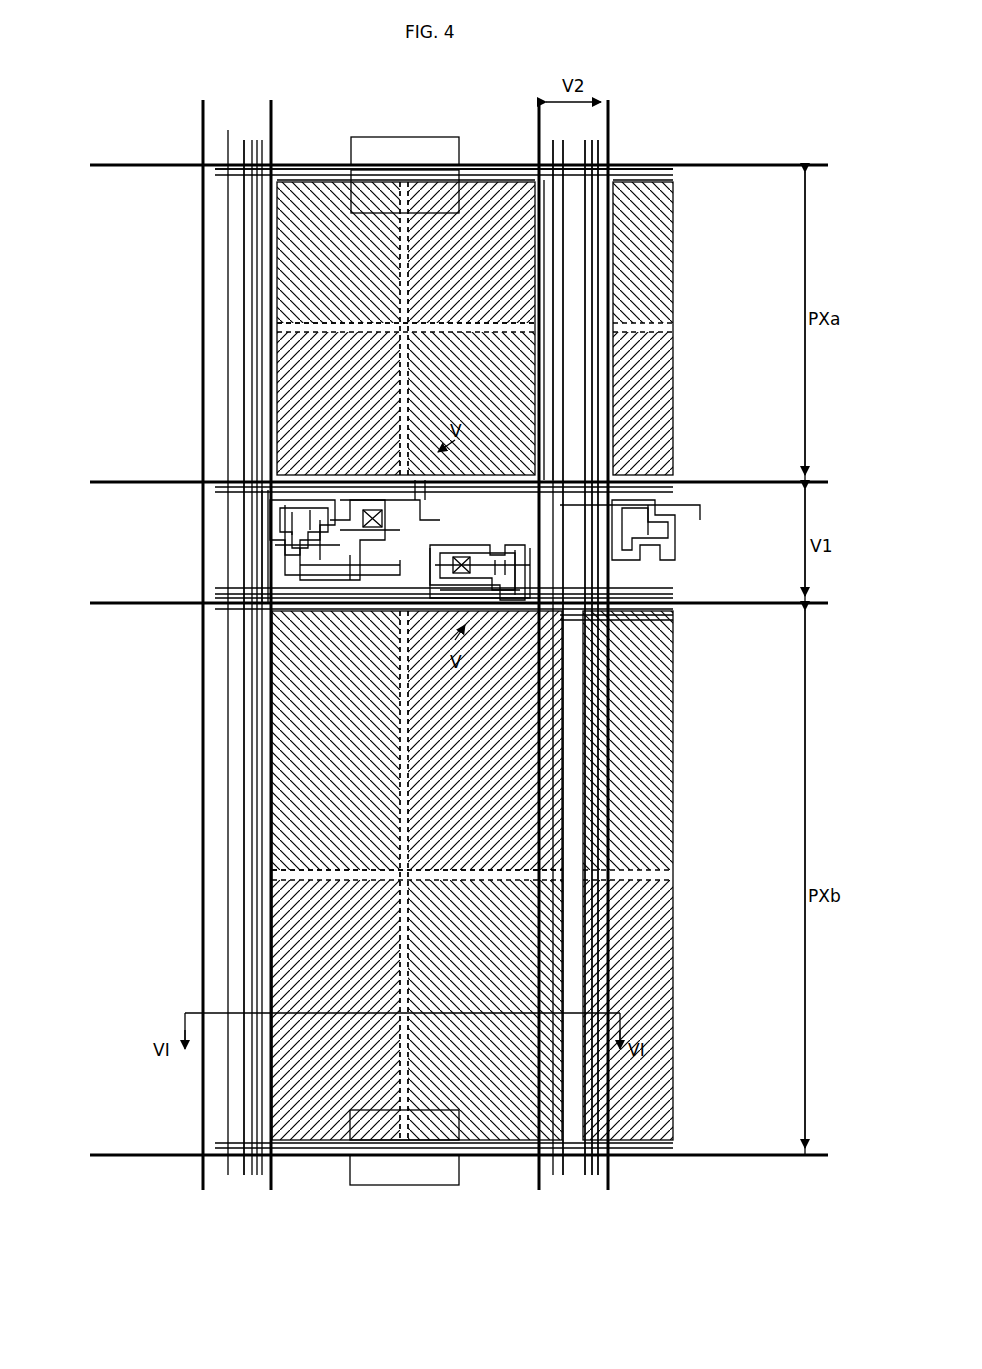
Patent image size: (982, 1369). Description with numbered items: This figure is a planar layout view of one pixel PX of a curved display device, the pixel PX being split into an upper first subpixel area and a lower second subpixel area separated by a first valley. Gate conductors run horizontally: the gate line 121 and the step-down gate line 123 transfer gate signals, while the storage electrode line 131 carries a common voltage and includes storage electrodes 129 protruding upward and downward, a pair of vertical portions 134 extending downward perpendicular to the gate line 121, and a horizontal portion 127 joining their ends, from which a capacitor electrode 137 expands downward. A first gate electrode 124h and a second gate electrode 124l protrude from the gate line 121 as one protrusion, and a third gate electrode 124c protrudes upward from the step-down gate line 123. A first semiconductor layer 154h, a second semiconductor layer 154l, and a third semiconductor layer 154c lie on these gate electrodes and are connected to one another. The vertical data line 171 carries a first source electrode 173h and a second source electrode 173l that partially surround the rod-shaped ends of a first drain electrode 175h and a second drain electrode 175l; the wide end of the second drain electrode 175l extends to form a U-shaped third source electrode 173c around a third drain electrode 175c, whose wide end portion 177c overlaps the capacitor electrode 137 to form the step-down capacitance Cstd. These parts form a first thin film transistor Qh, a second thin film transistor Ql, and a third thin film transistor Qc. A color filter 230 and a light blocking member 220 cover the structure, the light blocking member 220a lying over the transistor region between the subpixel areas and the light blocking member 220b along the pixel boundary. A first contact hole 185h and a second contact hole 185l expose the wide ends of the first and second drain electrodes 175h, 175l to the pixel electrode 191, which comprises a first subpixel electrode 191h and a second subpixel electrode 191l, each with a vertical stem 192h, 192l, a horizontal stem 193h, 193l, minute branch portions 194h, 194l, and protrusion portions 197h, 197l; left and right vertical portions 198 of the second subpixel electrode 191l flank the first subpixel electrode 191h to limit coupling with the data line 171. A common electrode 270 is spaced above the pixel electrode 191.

The pixel PX is at (158, 84).
The gate line 121 is at (676, 541).
The data line 171 is at (262, 214).
The color filter 230 is at (244, 243).
The first subpixel electrode 191h is at (490, 315).
The second subpixel electrode 191l is at (150, 1050).
The pixel electrode 191 is at (735, 1082).
The vertical stem of first subpixel electrode 192h is at (405, 185).
The vertical stem of second subpixel electrode 192l is at (410, 830).
The horizontal stem of first subpixel electrode 193h is at (300, 325).
The horizontal stem of second subpixel electrode 193l is at (275, 870).
The minute branch portions of first subpixel electrode 194h is at (300, 270).
The minute branch portions of second subpixel electrode 194l is at (275, 805).
The protrusion portion of first subpixel electrode 197h is at (400, 605).
The protrusion portion of second subpixel electrode 197l is at (515, 600).
The storage electrode line 131 is at (500, 180).
The storage electrode 129 is at (440, 137).
The vertical portion 134 is at (545, 290).
The light blocking member 220 is at (560, 370).
The light blocking member 220a is at (345, 590).
The light blocking member 220b is at (560, 815).
The first thin film transistor Qh is at (255, 515).
The second thin film transistor Ql is at (320, 505).
The third thin film transistor Qc is at (500, 578).
The step-down capacitance Cstd is at (485, 470).
The wide end portion of third drain electrode 177c is at (575, 450).
The second gate electrode 124l is at (330, 520).
The first gate electrode 124h is at (340, 590).
The third gate electrode 124c is at (590, 590).
The second source electrode 173l is at (300, 500).
The first source electrode 173h is at (320, 575).
The third source electrode 173c is at (650, 570).
The first drain electrode 175h is at (290, 530).
The second drain electrode 175l is at (360, 540).
The third drain electrode 175c is at (530, 555).
The first semiconductor layer 154h is at (300, 560).
The second semiconductor layer 154l is at (380, 545).
The third semiconductor layer 154c is at (470, 580).
The first contact hole 185h is at (380, 600).
The second contact hole 185l is at (520, 590).
The horizontal portion 127 is at (262, 490).
The capacitor electrode 137 is at (575, 525).
The left and right vertical portions 198 is at (600, 470).
The step-down gate line 123 is at (600, 625).
The common electrode 270 is at (640, 615).